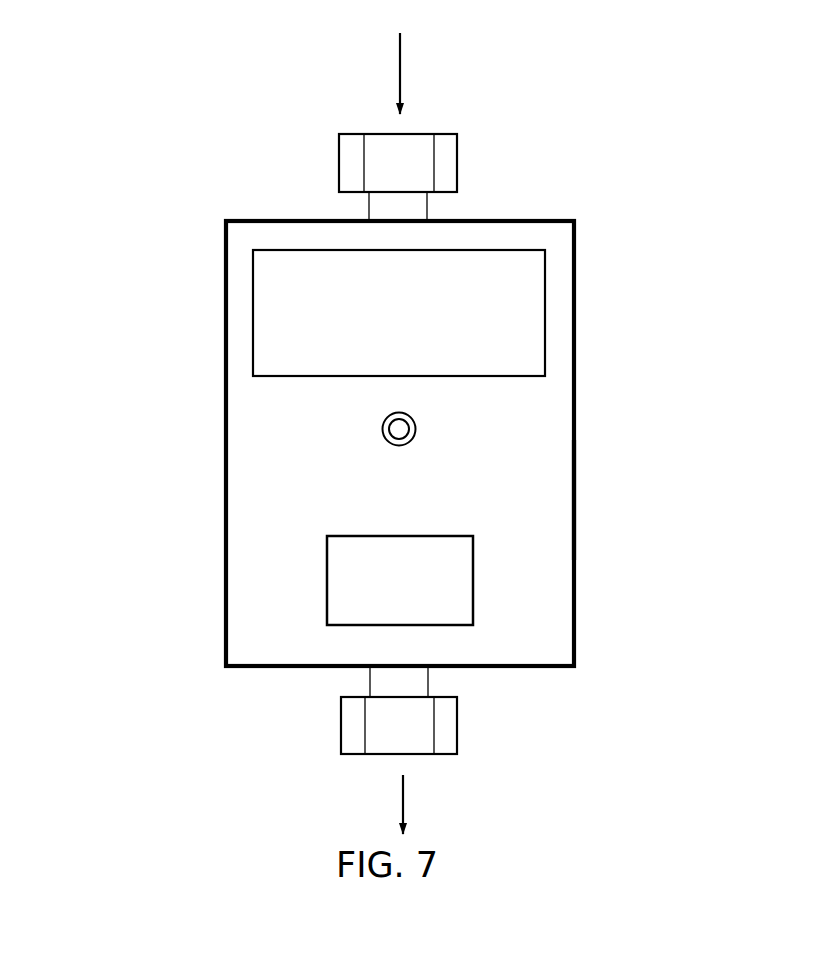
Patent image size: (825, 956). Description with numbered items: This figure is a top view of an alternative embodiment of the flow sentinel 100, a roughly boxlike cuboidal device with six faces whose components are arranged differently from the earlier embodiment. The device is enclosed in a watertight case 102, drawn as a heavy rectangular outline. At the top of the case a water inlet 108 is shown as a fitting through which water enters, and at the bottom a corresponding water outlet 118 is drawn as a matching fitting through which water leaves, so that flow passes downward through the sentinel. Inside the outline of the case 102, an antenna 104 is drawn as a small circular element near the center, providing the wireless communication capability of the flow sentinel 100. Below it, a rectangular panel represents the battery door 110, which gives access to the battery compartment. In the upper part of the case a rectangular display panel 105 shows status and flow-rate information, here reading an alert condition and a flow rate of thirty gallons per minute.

The flow sentinel 100 is at (586, 497).
The watertight case 102 is at (268, 484).
The antenna 104 is at (383, 429).
The display 105 is at (280, 352).
The water inlet 108 is at (447, 152).
The battery door 110 is at (345, 580).
The water outlet 118 is at (448, 726).